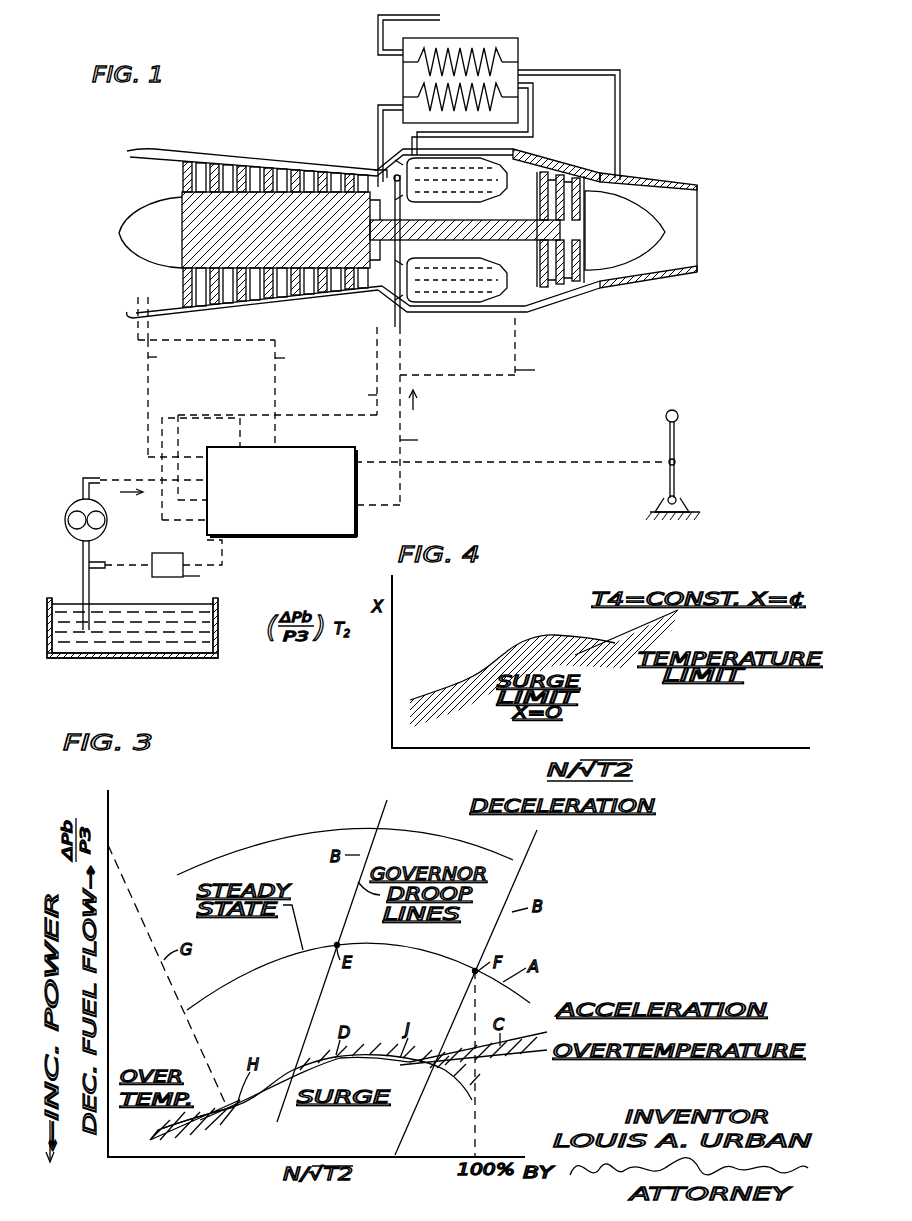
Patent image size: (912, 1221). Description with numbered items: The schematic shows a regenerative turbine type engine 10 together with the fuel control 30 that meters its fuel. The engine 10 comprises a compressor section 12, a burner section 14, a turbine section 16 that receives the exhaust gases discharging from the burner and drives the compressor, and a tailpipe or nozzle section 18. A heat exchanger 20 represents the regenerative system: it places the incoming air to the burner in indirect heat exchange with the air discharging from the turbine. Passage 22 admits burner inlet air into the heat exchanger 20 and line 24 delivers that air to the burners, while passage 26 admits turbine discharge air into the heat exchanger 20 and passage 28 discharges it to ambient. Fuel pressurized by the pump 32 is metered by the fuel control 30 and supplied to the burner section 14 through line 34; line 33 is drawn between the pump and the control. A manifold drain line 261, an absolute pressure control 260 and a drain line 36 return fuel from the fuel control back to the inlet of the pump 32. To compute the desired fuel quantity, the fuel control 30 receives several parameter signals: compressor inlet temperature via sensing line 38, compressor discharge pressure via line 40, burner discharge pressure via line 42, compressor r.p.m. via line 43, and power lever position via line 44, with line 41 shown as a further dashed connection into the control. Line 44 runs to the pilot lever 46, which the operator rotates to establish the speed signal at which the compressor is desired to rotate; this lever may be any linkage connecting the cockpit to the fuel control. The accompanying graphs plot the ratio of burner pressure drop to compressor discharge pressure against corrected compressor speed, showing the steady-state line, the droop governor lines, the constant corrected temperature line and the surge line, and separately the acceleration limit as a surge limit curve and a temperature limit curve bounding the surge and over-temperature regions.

The turbine engine of the regenerative type 10 is at (429, 205).
The compressor section 12 is at (214, 163).
The burner section 14 is at (480, 202).
The turbine section 16 is at (566, 172).
The tailpipe section or nozzle section 18 is at (683, 200).
The heat exchanger 20 is at (520, 38).
The passage 22 is at (376, 125).
The line 24 is at (410, 135).
The passage 26 is at (589, 72).
The passage 28 is at (440, 20).
The fuel control 30 is at (282, 519).
The pump 32 is at (75, 503).
The fuel supply line 33 is at (130, 477).
The line 34 is at (400, 358).
The drain line 36 is at (124, 562).
The sensing line 38 is at (150, 390).
The line 40 is at (377, 335).
The signal line 41 is at (240, 425).
The burner pressure signal line 42 is at (515, 340).
The line 43 is at (138, 340).
The line 44 is at (548, 462).
The pilot lever 46 is at (677, 446).
The absolute pressure control 260 is at (200, 575).
The manifold drain line 261 is at (230, 545).